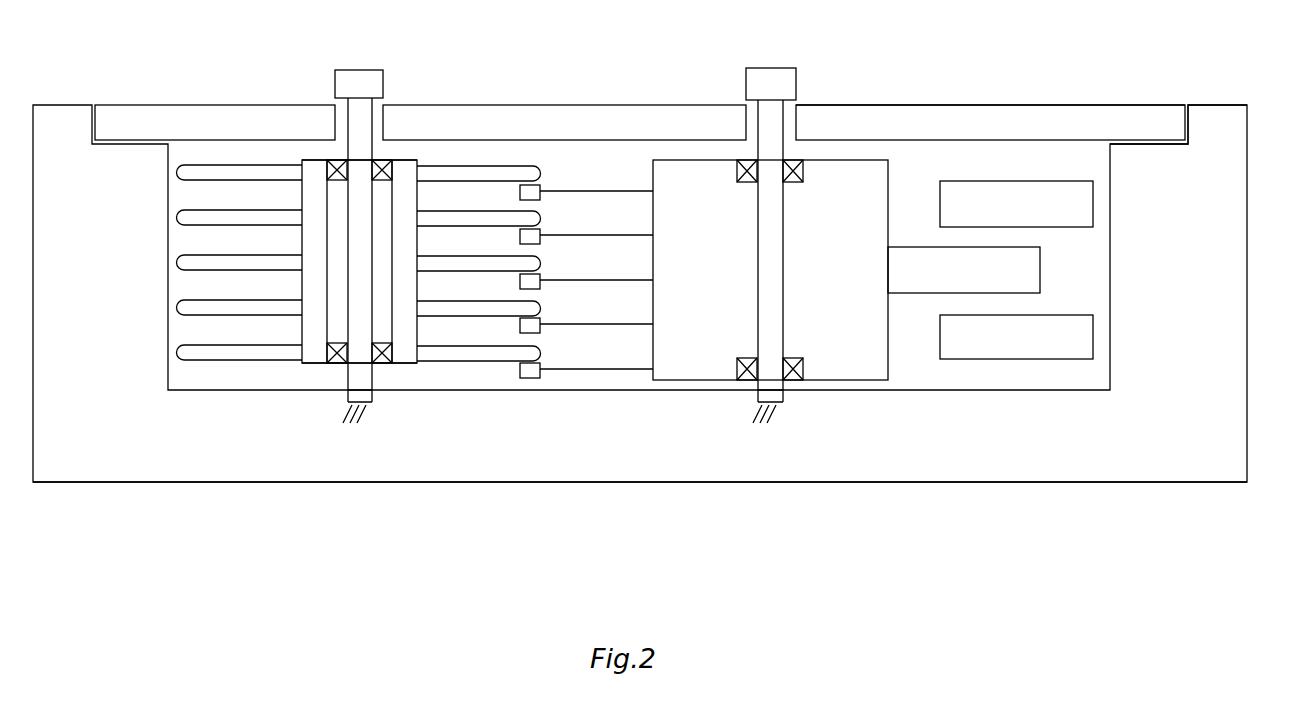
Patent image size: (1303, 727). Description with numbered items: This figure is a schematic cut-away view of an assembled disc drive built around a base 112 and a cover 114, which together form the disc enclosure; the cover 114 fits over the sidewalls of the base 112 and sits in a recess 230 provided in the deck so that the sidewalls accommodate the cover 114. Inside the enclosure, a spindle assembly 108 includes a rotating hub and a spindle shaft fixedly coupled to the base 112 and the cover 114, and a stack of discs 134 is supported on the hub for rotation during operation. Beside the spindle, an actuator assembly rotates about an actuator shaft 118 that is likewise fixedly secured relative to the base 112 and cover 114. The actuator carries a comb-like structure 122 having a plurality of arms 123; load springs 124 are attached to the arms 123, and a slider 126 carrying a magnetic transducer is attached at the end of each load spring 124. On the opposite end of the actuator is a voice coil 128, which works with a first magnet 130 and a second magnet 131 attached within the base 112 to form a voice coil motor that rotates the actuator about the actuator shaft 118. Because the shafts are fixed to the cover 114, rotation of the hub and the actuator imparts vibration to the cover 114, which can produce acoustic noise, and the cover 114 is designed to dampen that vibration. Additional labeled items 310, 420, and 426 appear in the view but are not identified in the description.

The spindle assembly 108 is at (425, 160).
The base 112 is at (1247, 352).
The cover 114 is at (1097, 116).
The actuator shaft 118 is at (771, 68).
The comb-like structure 122 is at (1147, 146).
The actuator arms 123 is at (627, 280).
The load springs 124 is at (403, 360).
The slider 126 is at (532, 278).
The voice coil 128 is at (1040, 270).
The first magnet 130 is at (1035, 353).
The second magnet 131 is at (1015, 188).
The discs 134 is at (244, 307).
The recess 230 is at (127, 144).
The base 310 is at (350, 482).
The motor block 420 is at (843, 170).
The shaft 426 is at (358, 69).